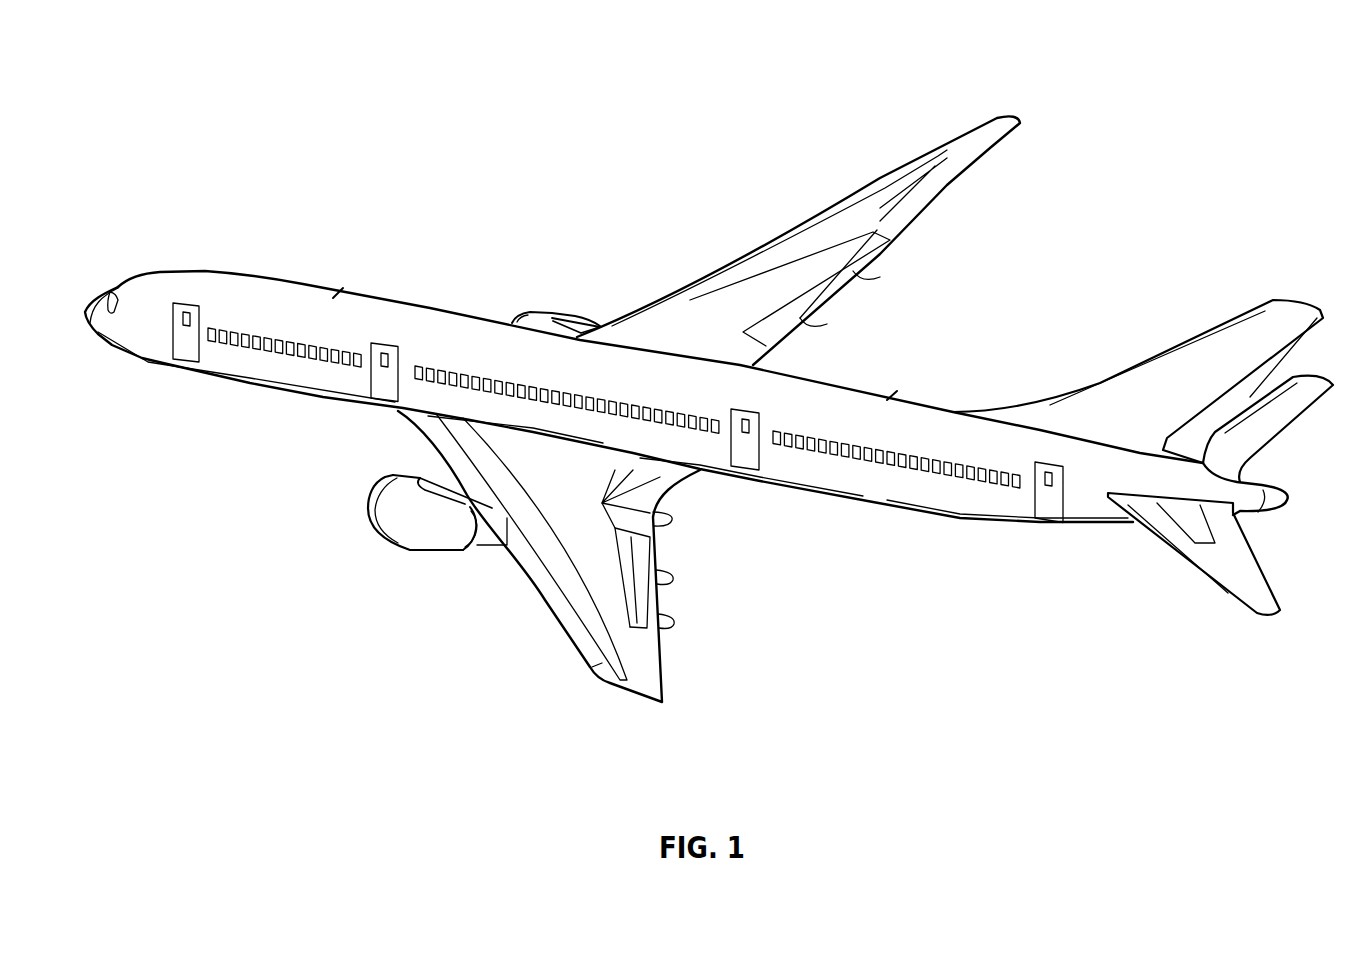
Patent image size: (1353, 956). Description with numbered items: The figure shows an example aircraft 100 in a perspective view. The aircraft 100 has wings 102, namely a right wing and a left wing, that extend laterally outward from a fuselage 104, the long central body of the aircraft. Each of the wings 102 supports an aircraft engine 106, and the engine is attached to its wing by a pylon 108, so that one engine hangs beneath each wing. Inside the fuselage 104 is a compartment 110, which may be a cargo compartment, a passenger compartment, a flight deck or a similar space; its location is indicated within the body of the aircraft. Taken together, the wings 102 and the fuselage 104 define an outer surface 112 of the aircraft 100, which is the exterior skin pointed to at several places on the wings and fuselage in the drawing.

The aircraft 100 is at (1197, 106).
The wings 102 is at (812, 218).
The fuselage 104 is at (711, 468).
The aircraft engine 106 is at (533, 318).
The pylon 108 is at (582, 316).
The compartment 110 is at (864, 322).
The outer surface 112 is at (697, 322).